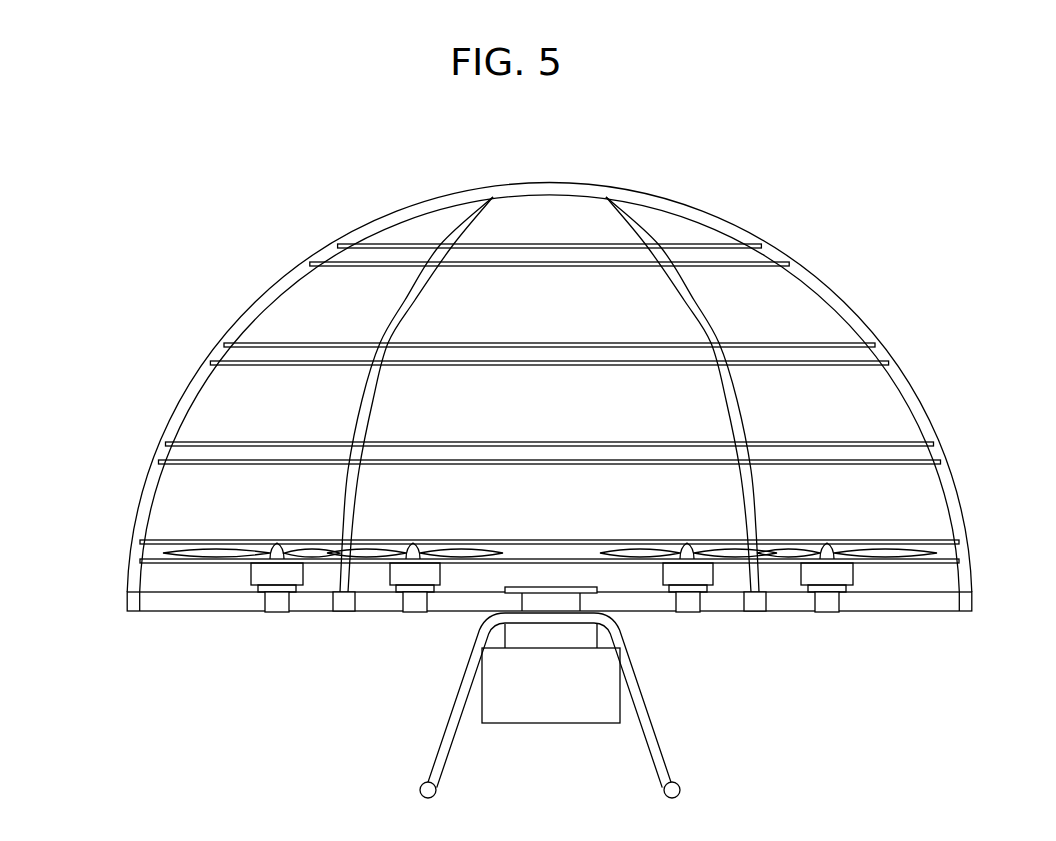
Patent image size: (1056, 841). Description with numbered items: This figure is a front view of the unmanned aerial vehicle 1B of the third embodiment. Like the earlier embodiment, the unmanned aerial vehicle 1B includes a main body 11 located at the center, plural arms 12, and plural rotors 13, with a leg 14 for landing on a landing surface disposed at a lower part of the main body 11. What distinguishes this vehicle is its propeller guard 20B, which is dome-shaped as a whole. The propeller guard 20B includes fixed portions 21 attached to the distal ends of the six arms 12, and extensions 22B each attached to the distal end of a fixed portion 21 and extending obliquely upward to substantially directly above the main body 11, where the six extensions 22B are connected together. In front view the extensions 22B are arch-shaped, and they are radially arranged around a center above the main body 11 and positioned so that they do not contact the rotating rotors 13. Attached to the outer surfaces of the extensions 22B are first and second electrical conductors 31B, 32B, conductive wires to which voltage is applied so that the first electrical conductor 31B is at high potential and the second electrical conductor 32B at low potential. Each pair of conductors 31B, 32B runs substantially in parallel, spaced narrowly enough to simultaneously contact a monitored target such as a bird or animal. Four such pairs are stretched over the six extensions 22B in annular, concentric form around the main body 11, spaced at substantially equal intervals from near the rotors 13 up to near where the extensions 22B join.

The unmanned aerial vehicle 1B is at (850, 172).
The propeller guard 20B is at (945, 382).
The extension 22B is at (143, 503).
The second electrical conductor 32B is at (378, 244).
The first electrical conductor 31B is at (362, 265).
The fixed portion 21 is at (186, 613).
The arm 12 is at (305, 613).
The rotor 13 is at (228, 553).
The main body 11 is at (553, 597).
The leg 14 is at (438, 753).